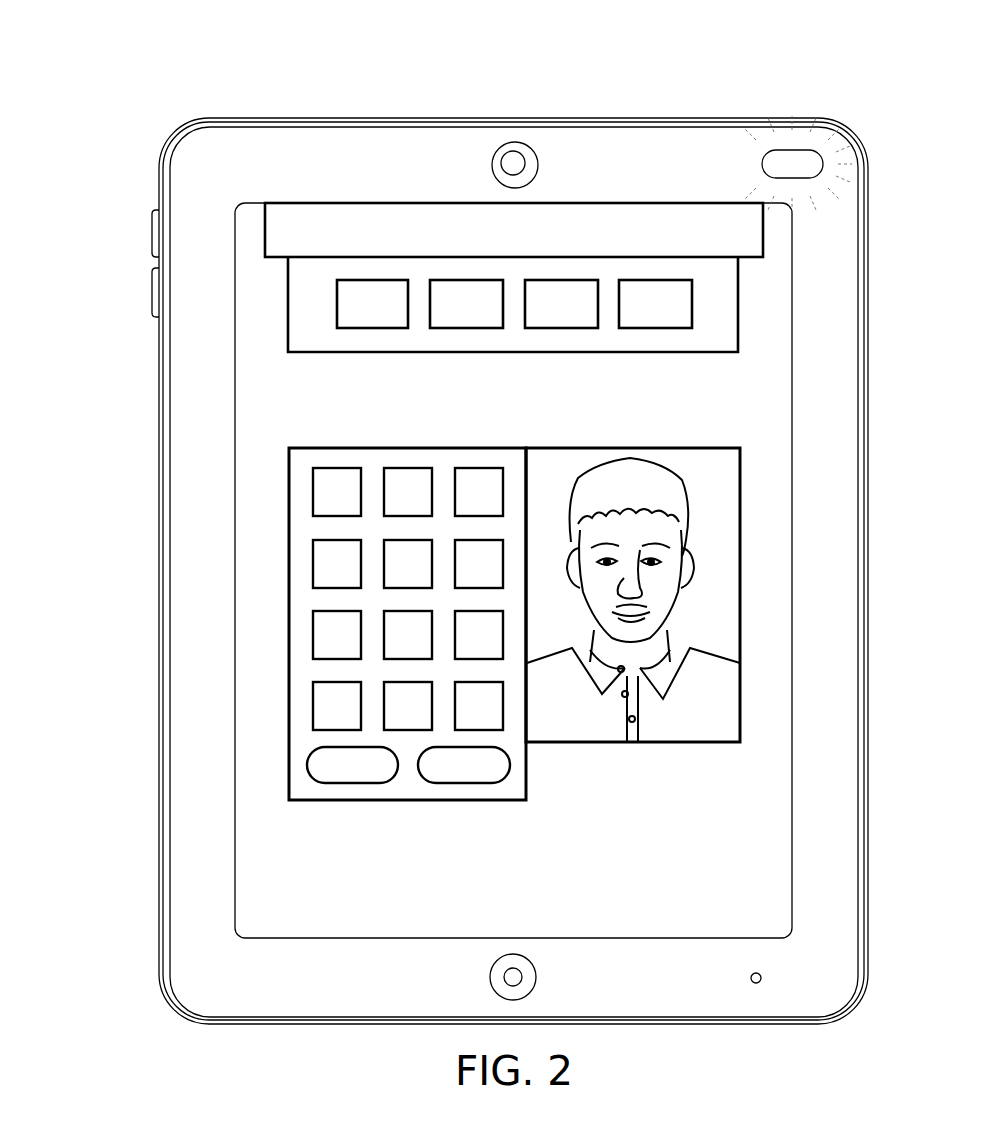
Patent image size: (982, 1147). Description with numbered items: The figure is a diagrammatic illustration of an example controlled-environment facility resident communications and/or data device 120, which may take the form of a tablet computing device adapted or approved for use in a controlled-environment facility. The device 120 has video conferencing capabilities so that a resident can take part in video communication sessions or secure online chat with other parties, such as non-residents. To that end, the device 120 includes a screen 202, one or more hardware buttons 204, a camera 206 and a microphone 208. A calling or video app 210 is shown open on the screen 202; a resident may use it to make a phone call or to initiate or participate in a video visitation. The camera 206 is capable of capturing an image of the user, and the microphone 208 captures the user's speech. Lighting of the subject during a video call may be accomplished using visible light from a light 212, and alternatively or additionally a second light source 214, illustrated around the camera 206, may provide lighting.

The controlled-environment facility resident communications and/or data device 120 is at (712, 80).
The screen 202 is at (397, 928).
The hardware buttons 204 is at (140, 268).
The camera 206 is at (520, 168).
The microphone 208 is at (762, 981).
The calling or video app 210 is at (550, 783).
The light 212 is at (762, 165).
The second light source 214 is at (492, 163).